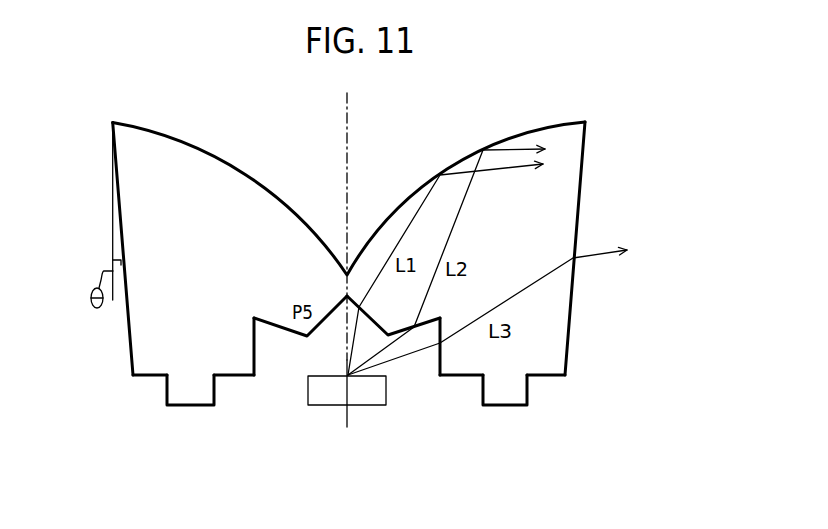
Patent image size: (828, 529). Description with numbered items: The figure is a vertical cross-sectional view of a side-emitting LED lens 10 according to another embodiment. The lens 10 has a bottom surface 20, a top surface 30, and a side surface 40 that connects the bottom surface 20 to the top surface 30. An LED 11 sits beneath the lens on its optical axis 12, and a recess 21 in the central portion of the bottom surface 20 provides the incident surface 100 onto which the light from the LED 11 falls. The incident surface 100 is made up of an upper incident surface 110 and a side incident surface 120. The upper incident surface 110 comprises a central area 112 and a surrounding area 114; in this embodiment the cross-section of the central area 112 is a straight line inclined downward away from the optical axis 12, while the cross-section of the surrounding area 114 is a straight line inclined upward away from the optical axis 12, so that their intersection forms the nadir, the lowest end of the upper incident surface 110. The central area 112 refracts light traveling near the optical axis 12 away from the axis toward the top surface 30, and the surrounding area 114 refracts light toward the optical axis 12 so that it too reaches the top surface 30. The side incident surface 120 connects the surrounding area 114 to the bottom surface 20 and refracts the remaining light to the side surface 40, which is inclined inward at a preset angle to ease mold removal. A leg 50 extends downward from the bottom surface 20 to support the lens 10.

The side-emitting LED lens 10 is at (221, 110).
The LED 11 is at (375, 395).
The optical axis 12 is at (347, 141).
The bottom surface 20 is at (456, 378).
The recess 21 is at (305, 348).
The top surface 30 is at (460, 159).
The side surface 40 is at (577, 212).
The leg 50 is at (505, 405).
The incident surface 100 is at (220, 227).
The upper incident surface 110 is at (297, 245).
The central area 112 is at (332, 307).
The surrounding area 114 is at (280, 322).
The side incident surface 120 is at (252, 348).